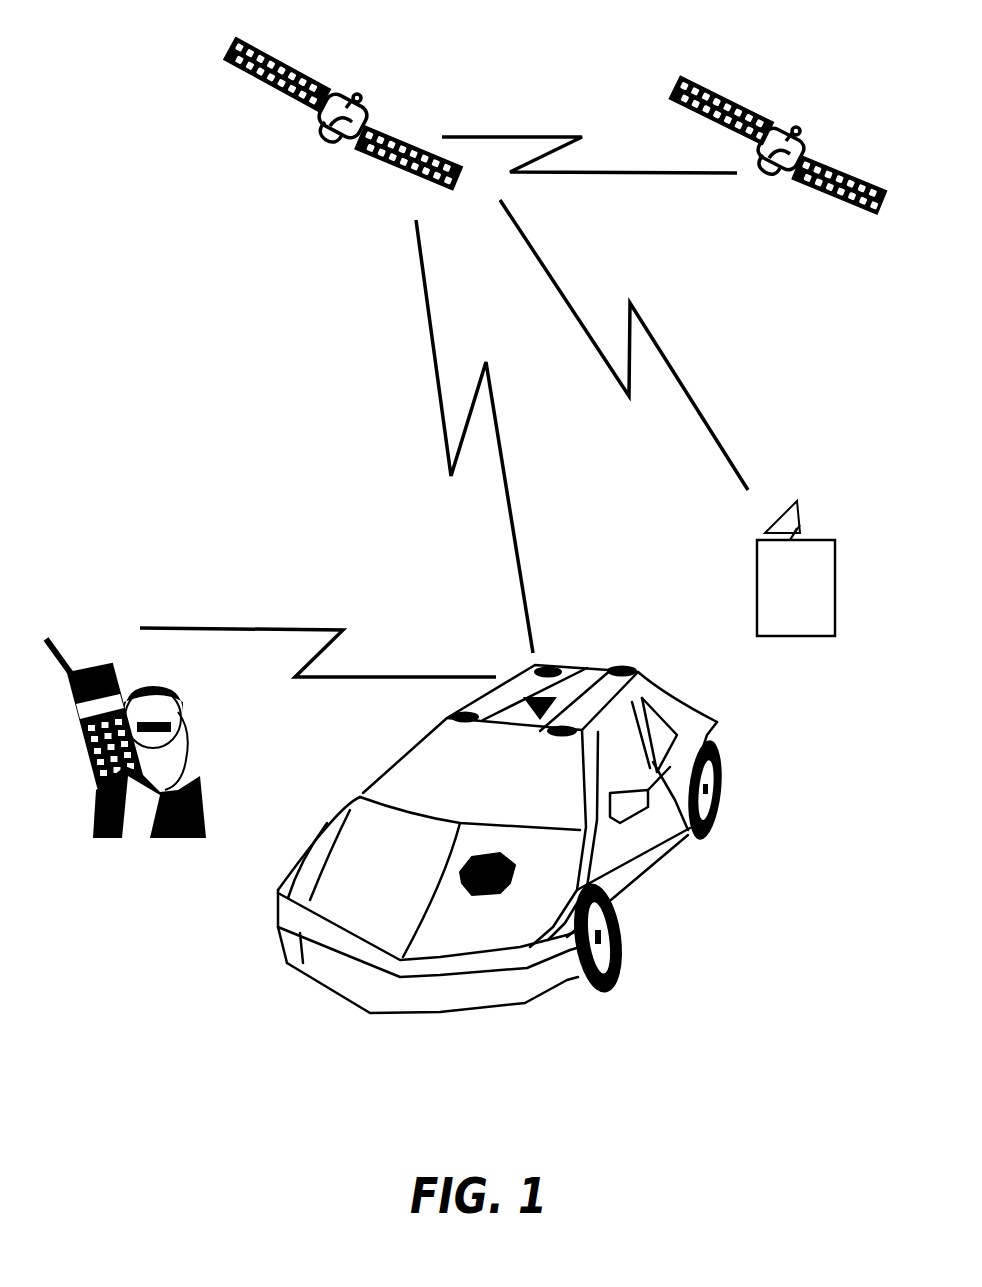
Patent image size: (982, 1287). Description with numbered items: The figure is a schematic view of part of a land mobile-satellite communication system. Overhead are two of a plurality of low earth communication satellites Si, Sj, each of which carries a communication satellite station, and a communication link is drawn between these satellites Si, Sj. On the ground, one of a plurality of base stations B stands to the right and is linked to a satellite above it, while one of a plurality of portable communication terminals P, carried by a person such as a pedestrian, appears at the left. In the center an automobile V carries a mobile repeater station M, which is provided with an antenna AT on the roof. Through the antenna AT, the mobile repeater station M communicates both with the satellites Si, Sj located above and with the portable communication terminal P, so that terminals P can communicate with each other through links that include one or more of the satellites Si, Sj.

The low earth communication satellite Si is at (362, 100).
The low earth communication satellite Sj is at (806, 151).
The base station B is at (823, 540).
The portable communication terminal P is at (80, 661).
The automobile V is at (697, 733).
The antenna AT is at (544, 677).
The mobile repeater station M is at (480, 897).